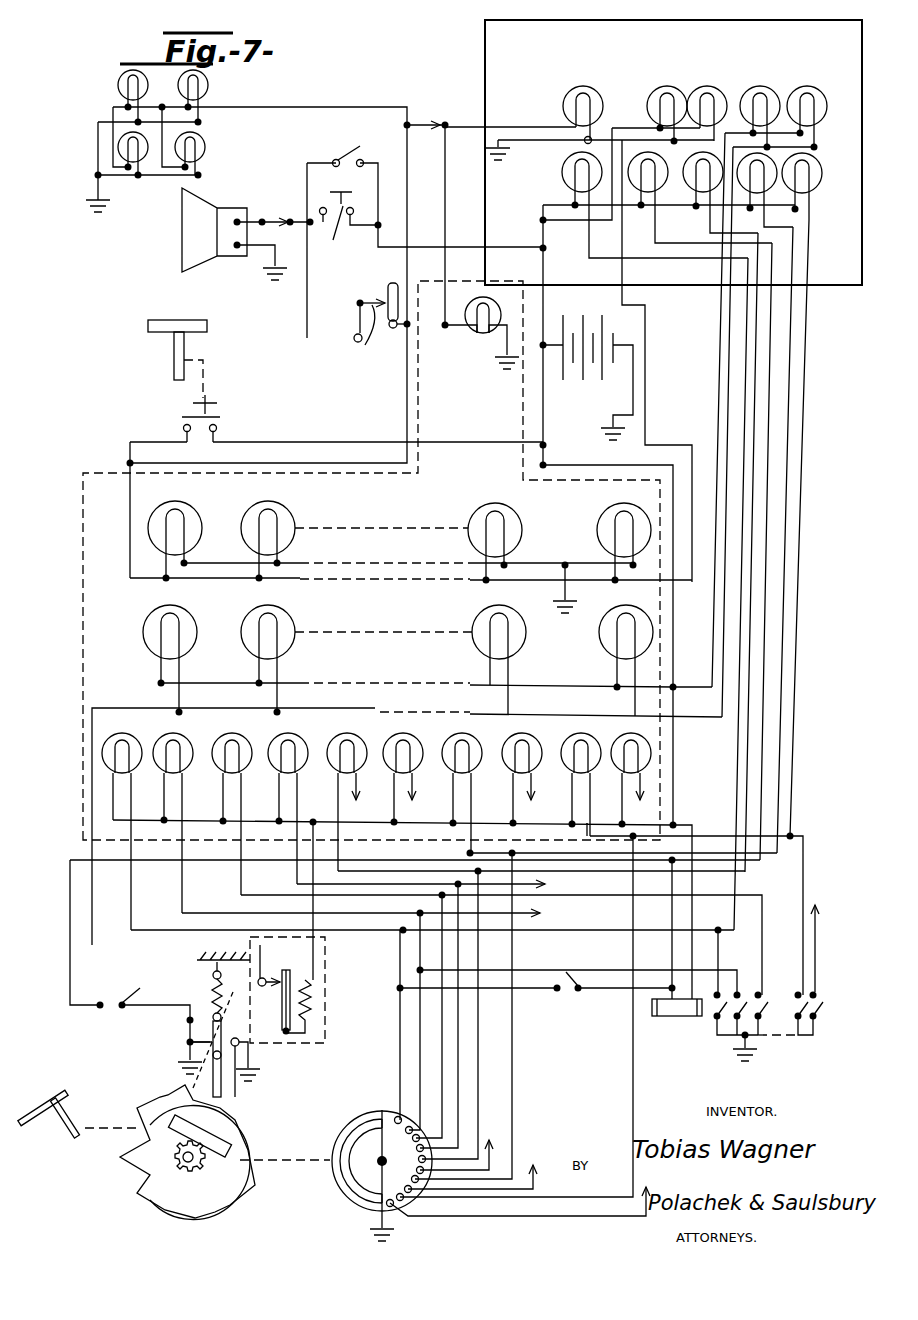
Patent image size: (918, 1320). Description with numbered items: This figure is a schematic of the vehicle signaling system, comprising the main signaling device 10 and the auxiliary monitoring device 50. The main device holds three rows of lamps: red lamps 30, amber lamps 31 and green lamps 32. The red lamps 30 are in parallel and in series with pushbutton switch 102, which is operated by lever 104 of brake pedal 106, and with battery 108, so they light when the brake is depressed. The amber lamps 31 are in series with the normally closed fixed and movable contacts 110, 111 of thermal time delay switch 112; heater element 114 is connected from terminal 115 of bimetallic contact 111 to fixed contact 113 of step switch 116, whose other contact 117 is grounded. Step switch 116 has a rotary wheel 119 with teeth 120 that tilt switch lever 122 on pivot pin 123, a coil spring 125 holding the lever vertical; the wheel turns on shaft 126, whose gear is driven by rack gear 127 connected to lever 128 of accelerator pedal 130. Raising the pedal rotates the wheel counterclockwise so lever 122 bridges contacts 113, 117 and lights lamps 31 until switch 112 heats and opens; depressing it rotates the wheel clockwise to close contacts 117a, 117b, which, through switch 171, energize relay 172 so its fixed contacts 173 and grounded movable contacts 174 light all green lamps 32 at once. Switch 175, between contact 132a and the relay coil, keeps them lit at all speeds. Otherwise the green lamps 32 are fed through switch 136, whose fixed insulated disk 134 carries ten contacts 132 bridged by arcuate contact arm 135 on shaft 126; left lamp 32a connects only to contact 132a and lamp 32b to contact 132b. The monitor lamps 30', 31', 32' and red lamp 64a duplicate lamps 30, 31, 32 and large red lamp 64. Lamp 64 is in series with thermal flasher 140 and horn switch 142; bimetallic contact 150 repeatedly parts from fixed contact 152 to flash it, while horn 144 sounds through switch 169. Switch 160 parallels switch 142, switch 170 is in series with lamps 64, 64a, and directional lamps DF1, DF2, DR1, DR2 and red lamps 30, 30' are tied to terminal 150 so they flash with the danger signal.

The front directional signal lamp DF1 is at (118, 84).
The front directional signal lamp DF2 is at (208, 85).
The rear directional signal lamp DR1 is at (128, 150).
The rear directional signal lamp DR2 is at (205, 150).
The auxiliary monitoring device 50 is at (480, 70).
The switch 170 is at (430, 122).
The switch 160 is at (343, 156).
The horn 144 is at (208, 196).
The switch 169 is at (273, 215).
The switch 142 is at (348, 227).
The bimetallic thermal contact 150 is at (395, 282).
The thermal flasher switch 140 is at (357, 300).
The fixed contact 152 is at (360, 340).
The brake pedal 106 is at (190, 320).
The lever 104 is at (172, 355).
The pushbutton switch 102 is at (215, 420).
The red lamp 64a is at (562, 106).
The red lamps 30' is at (717, 116).
The amber lamps 31' is at (836, 85).
The green lamps 32' is at (655, 183).
The red lamp 64 is at (475, 340).
The battery 108 is at (580, 368).
The red lamps 30 is at (399, 530).
The amber lamps 31 is at (398, 657).
The green lamps 32 is at (345, 824).
The left lamp 32a is at (102, 745).
The lamp 32b is at (157, 740).
The main signaling device 10 is at (75, 830).
The switch 171 is at (112, 998).
The normally open contact 117a is at (186, 1020).
The normally open contact 117b is at (186, 1042).
The coil spring 125 is at (210, 986).
The switch lever 122 is at (180, 1031).
The pivot pin 123 is at (188, 1052).
The accelerator pedal 130 is at (46, 1104).
The lever 128 is at (81, 1112).
The teeth 120 is at (165, 1100).
The step switch 116 is at (113, 1185).
The shaft 126 is at (180, 1172).
The rack gear 127 is at (235, 1142).
The rotary wheel 119 is at (215, 1177).
The fixed contact 110 is at (302, 963).
The fixed contact 113 is at (241, 1029).
The heater element 114 is at (312, 998).
The thermal time delay switch 112 is at (326, 1022).
The movable contact 111 is at (305, 1034).
The terminal 115 is at (292, 1025).
The contact 117 is at (245, 1074).
The contact 132b is at (396, 1116).
The contact 132a is at (395, 1118).
The contacts 132 is at (390, 1121).
The rotary arcuate contact arm 135 is at (345, 1150).
The fixed insulated disk 134 is at (340, 1178).
The switch 136 is at (340, 1193).
The movable contacts 174 is at (742, 998).
The fixed contacts 173 is at (766, 1000).
The switch 175 is at (573, 996).
The relay 172 is at (680, 1018).